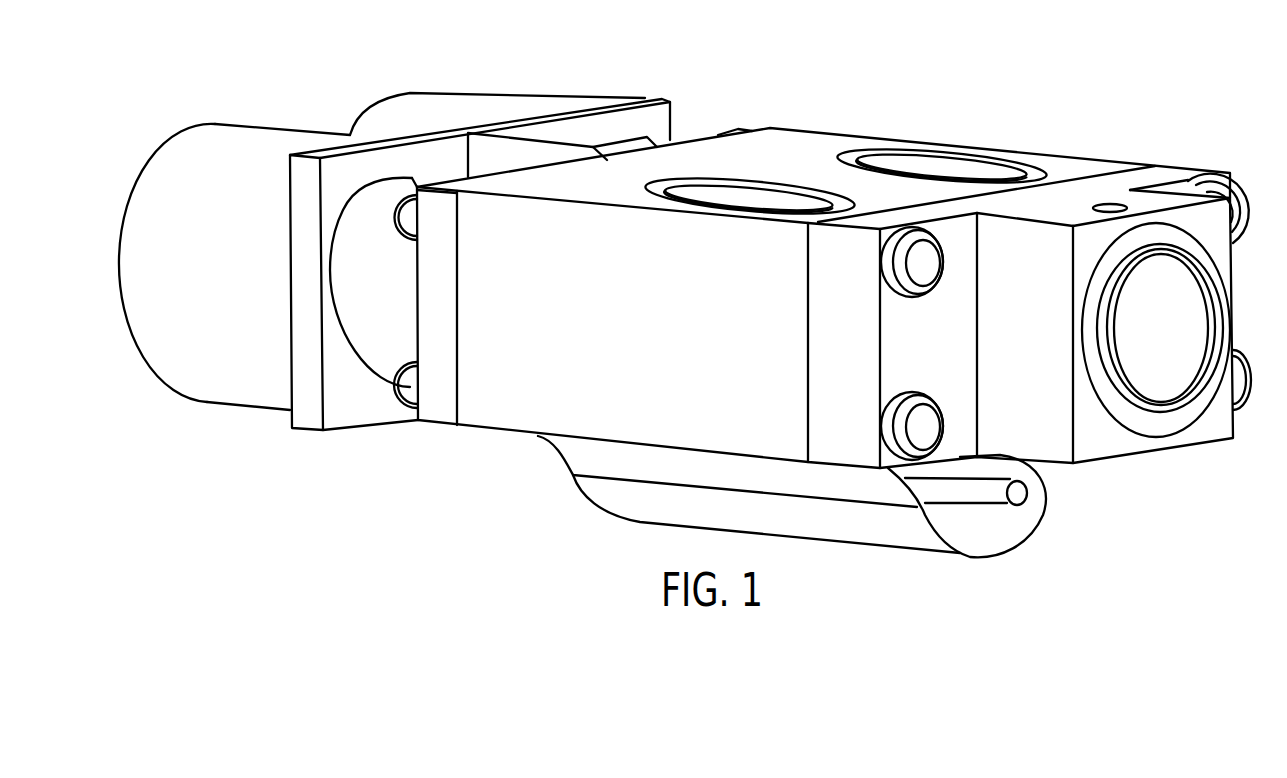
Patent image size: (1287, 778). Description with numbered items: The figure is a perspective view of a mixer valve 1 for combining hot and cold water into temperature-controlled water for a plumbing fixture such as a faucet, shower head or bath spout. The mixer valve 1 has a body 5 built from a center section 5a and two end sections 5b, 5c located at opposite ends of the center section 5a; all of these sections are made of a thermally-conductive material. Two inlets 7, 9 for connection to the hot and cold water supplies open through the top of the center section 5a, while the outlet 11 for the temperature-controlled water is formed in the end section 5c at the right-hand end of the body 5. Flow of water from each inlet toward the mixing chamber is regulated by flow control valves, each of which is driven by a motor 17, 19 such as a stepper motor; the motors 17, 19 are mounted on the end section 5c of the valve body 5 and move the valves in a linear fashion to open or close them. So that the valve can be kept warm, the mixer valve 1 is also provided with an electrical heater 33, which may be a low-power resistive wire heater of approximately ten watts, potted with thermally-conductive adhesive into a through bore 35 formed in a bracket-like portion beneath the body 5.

The mixer valve 1 is at (427, 513).
The body 5 is at (530, 393).
The center section 5a is at (1083, 167).
The end section 5b is at (441, 410).
The end section 5c is at (1110, 442).
The inlet 7 is at (955, 165).
The inlet 9 is at (767, 193).
The outlet 11 is at (1185, 320).
The motor 17 is at (443, 107).
The motor 19 is at (248, 143).
The heater 33 is at (1022, 494).
The through bore 35 is at (997, 520).